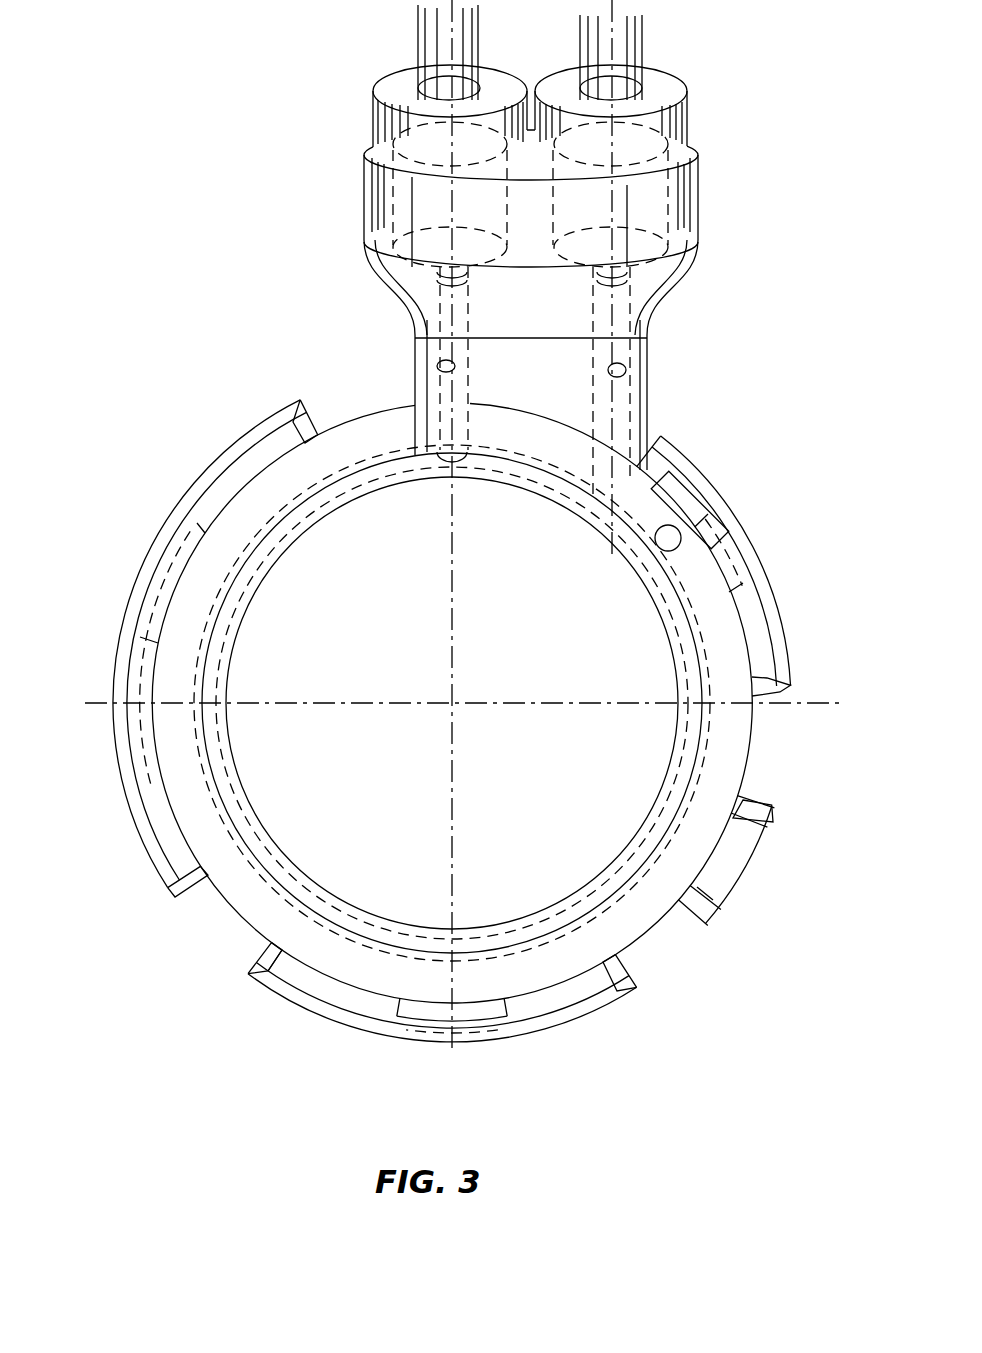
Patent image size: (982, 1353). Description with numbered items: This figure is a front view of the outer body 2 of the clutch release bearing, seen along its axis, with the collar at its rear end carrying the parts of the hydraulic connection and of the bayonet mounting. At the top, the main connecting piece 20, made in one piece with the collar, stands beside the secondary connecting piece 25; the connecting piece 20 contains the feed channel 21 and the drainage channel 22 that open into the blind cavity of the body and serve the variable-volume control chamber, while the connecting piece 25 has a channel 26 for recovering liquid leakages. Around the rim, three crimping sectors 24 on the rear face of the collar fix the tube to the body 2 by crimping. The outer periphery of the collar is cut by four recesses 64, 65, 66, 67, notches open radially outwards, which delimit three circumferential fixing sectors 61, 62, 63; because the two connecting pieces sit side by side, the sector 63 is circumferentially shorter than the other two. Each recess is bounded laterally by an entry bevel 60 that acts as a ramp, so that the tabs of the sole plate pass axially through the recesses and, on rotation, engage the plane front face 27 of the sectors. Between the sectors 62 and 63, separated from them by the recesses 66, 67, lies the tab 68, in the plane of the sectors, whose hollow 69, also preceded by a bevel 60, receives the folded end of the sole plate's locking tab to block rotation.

The outer body 2 is at (162, 434).
The main connecting piece 20 is at (700, 212).
The feed channel 21 is at (434, 366).
The drainage channel 22 is at (627, 372).
The crimping sectors 24 is at (733, 558).
The secondary connecting piece 25 is at (690, 458).
The channel 26 is at (680, 536).
The plane front face 27 is at (293, 975).
The entry bevel 60 is at (306, 404).
The circumferential fixing sector 61 is at (130, 815).
The circumferential fixing sector 62 is at (365, 1025).
The circumferential fixing sector 63 is at (775, 612).
The recess 64 is at (347, 416).
The recess 65 is at (188, 892).
The recess 66 is at (628, 968).
The recess 67 is at (745, 798).
The tab 68 is at (712, 918).
The hollow 69 is at (738, 852).